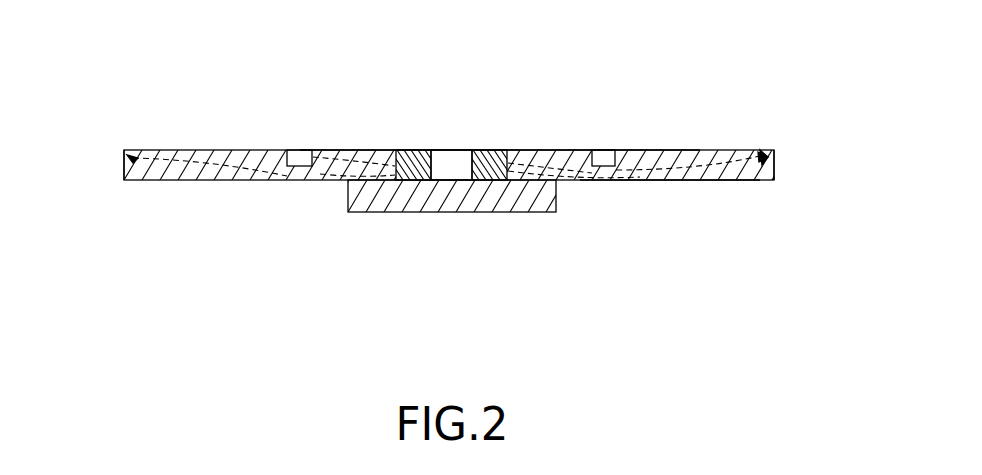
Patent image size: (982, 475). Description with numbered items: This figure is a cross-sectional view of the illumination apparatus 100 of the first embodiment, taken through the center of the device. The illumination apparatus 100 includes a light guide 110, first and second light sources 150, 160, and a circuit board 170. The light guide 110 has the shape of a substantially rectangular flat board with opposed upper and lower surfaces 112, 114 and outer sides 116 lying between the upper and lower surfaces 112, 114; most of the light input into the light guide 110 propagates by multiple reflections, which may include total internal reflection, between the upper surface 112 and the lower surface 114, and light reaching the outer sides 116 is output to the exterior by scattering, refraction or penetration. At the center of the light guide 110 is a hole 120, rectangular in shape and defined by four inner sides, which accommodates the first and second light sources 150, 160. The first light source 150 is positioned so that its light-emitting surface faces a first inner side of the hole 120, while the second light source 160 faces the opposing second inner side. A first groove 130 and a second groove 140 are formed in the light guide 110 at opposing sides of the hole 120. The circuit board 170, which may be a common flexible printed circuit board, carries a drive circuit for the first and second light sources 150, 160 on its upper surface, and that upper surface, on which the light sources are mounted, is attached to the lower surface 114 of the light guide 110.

The illumination apparatus 100 is at (440, 30).
The light guide 110 is at (204, 140).
The upper surface 112 is at (703, 150).
The lower surface 114 is at (680, 180).
The outer sides 116 is at (124, 171).
The hole 120 is at (455, 156).
The first groove 130 is at (298, 158).
The second groove 140 is at (603, 158).
The first light source 150 is at (410, 153).
The second light source 160 is at (494, 153).
The circuit board 170 is at (450, 212).